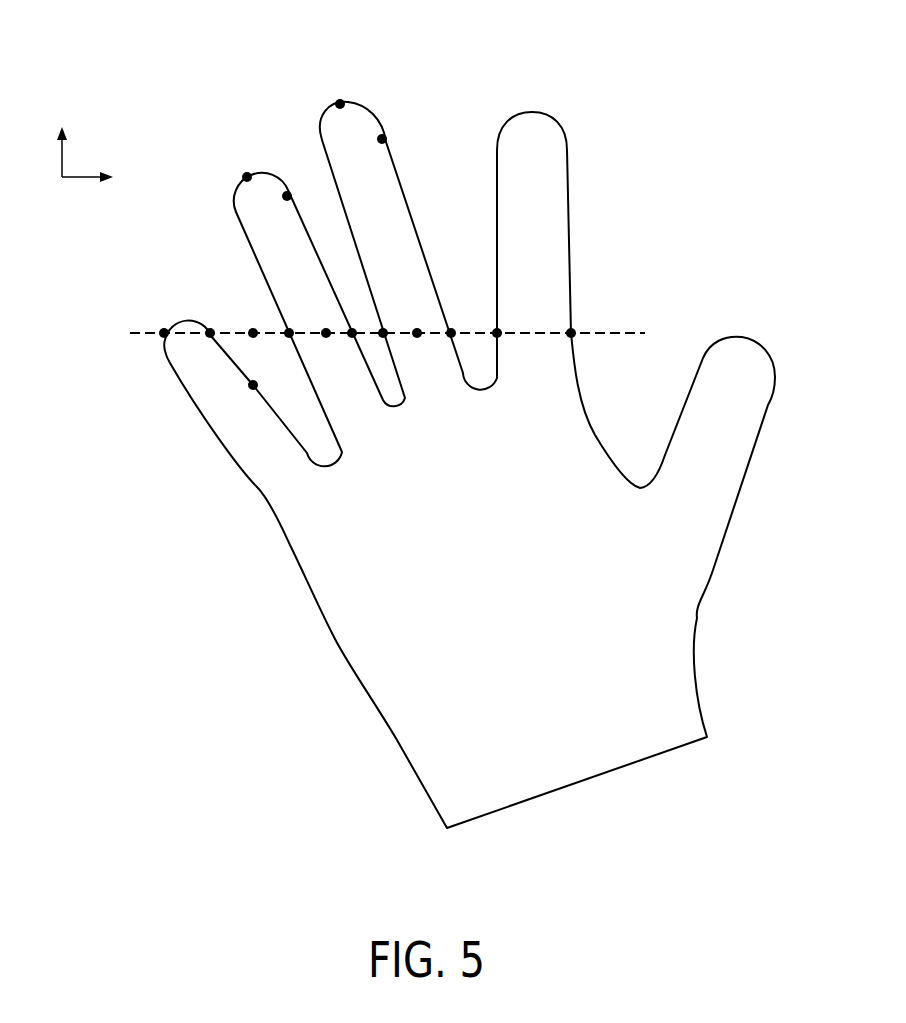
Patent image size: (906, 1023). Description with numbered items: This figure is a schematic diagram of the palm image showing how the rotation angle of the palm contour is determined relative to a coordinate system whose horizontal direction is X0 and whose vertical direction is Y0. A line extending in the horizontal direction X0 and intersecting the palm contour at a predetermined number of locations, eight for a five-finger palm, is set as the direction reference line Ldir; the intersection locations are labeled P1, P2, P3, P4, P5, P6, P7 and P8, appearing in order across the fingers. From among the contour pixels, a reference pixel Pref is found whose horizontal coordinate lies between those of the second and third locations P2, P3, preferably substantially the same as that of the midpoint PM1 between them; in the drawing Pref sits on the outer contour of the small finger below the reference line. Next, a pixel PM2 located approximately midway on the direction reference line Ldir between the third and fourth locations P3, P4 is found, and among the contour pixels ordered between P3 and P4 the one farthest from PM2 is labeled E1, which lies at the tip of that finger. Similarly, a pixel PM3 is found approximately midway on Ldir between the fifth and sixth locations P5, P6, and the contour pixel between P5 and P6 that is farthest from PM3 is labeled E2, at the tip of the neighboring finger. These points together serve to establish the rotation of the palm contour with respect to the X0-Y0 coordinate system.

The vertical direction of the coordinate system Y0 is at (60, 136).
The horizontal direction of the coordinate system X0 is at (103, 177).
The direction reference line Ldir is at (419, 332).
The first location P1 is at (164, 333).
The second location P2 is at (210, 333).
The third location P3 is at (289, 338).
The fourth location P4 is at (352, 338).
The fifth location P5 is at (383, 333).
The sixth location P6 is at (451, 333).
The seventh location P7 is at (497, 338).
The eighth location P8 is at (571, 338).
The midpoint between the second and third locations PM1 is at (253, 333).
The midway pixel between the third and fourth locations PM2 is at (326, 333).
The midway pixel between the fifth and sixth locations PM3 is at (417, 333).
The reference pixel Pref is at (253, 390).
The farthest contour pixel between the third and fourth locations E1 is at (247, 177).
The farthest contour pixel between the fifth and sixth locations E2 is at (340, 104).